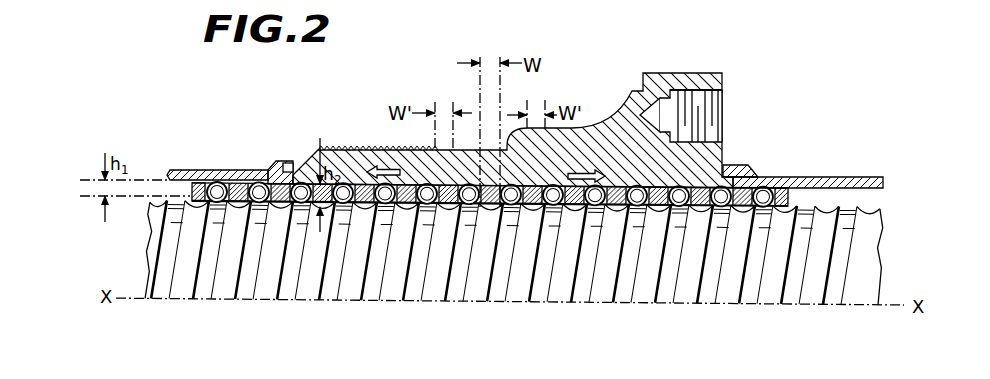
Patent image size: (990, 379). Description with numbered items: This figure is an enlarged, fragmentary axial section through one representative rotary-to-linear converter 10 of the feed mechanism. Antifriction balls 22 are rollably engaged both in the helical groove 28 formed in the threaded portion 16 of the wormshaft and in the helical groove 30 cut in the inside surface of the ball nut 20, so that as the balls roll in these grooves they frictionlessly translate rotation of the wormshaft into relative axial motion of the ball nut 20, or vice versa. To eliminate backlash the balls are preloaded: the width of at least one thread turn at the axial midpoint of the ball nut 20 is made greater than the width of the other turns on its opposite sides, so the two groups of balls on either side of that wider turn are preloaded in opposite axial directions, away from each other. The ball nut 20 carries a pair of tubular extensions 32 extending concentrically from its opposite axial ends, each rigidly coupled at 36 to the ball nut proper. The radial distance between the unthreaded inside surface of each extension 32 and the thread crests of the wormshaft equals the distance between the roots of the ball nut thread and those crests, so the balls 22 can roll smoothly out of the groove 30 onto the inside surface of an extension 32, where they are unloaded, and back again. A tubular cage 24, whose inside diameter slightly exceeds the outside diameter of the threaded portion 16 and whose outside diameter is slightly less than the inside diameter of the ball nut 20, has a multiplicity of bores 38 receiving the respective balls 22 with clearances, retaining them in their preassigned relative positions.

The rotary-to-linear converter 10 is at (738, 81).
The threaded portion 16 is at (876, 228).
The ball nut 20 is at (692, 82).
The antifriction balls 22 is at (258, 183).
The cage 24 is at (790, 202).
The helical groove 28 is at (383, 300).
The helical groove 30 is at (354, 162).
The tubular extensions 32 is at (213, 172).
The coupling 36 is at (290, 162).
The bores 38 is at (718, 199).